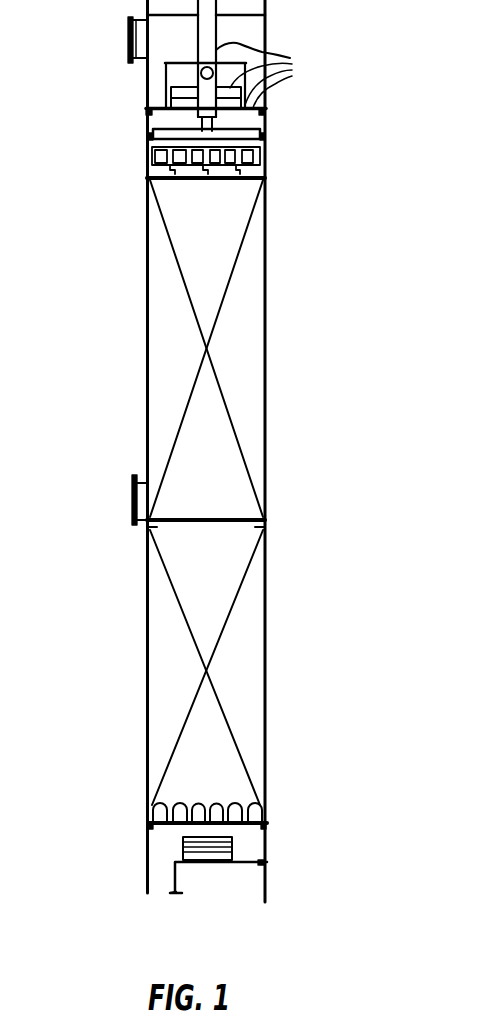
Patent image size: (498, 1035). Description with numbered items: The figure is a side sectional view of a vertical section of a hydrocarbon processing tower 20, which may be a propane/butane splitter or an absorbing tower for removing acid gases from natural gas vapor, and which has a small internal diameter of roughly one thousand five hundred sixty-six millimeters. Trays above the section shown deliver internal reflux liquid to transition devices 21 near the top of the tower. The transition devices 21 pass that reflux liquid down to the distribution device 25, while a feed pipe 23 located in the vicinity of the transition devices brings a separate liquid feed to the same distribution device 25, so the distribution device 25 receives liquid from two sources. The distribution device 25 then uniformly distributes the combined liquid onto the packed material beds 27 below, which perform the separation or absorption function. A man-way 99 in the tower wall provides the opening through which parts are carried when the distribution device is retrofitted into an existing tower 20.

The hydrocarbon processing tower 20 is at (300, 348).
The transition devices 21 is at (266, 75).
The feed pipe 23 is at (200, 70).
The distribution device 25 is at (268, 124).
The packed material beds 27 is at (262, 425).
The man-way 99 is at (128, 35).